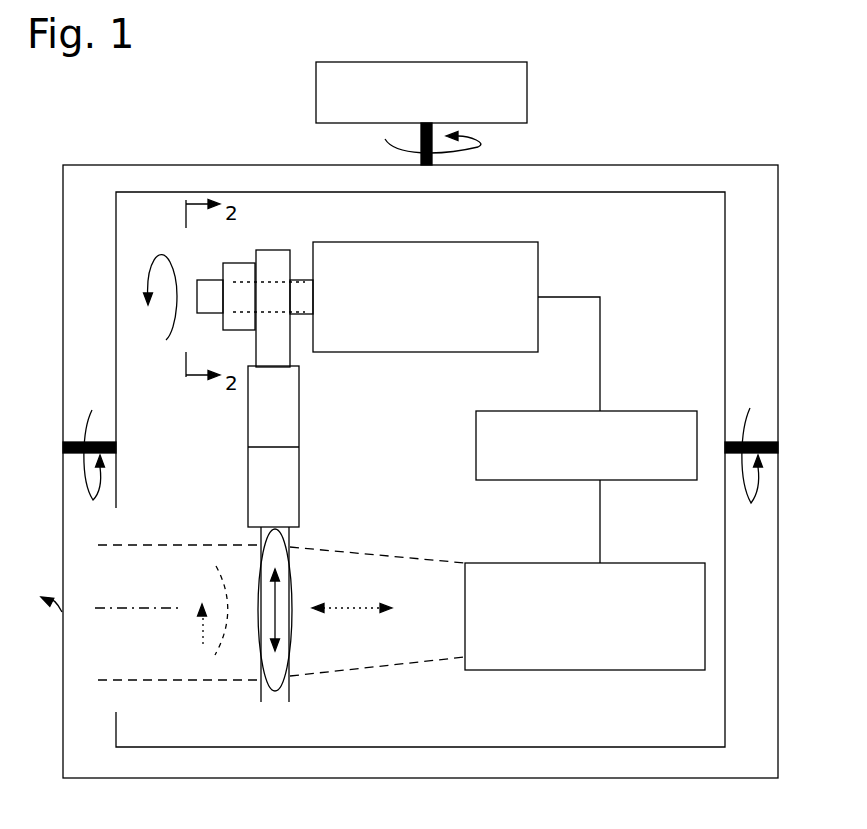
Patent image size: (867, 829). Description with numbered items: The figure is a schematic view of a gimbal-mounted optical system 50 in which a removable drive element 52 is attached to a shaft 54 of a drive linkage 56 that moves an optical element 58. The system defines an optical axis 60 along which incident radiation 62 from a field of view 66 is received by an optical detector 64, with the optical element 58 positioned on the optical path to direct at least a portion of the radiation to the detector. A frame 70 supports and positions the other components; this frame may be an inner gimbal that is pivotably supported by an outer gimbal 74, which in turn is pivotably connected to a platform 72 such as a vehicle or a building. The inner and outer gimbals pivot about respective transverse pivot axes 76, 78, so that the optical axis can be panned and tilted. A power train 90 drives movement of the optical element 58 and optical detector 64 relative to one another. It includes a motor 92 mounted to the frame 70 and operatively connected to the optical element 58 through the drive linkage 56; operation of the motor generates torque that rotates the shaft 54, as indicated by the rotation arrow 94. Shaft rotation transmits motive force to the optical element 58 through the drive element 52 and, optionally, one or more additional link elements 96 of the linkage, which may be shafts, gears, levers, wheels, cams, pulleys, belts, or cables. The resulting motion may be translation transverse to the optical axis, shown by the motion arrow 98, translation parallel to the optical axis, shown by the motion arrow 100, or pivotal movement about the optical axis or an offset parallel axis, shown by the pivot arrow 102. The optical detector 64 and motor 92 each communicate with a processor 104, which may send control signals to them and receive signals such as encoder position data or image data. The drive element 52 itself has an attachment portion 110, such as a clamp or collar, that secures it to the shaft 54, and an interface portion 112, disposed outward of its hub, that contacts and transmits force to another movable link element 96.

The optical system 50 is at (420, 432).
The drive element 52 is at (266, 246).
The shaft 54 is at (302, 280).
The drive linkage 56 is at (305, 446).
The optical element 58 is at (293, 632).
The optical axis 60 is at (145, 606).
The incident radiation 62 is at (137, 679).
The optical detector 64 is at (632, 563).
The field of view 66 is at (64, 615).
The frame 70 is at (725, 232).
The platform 72 is at (428, 62).
The outer gimbal 74 is at (611, 164).
The pivot axis 76 is at (420, 136).
The pivot axis 78 is at (757, 443).
The power train 90 is at (327, 446).
The motor 92 is at (430, 242).
The rotation arrow 94 is at (166, 340).
The link element 96 is at (299, 446).
The motion arrow 98 is at (277, 608).
The motion arrow 100 is at (350, 610).
The pivot arrow 102 is at (212, 648).
The processor 104 is at (632, 411).
The attachment portion 110 is at (240, 330).
The interface portion 112 is at (270, 368).